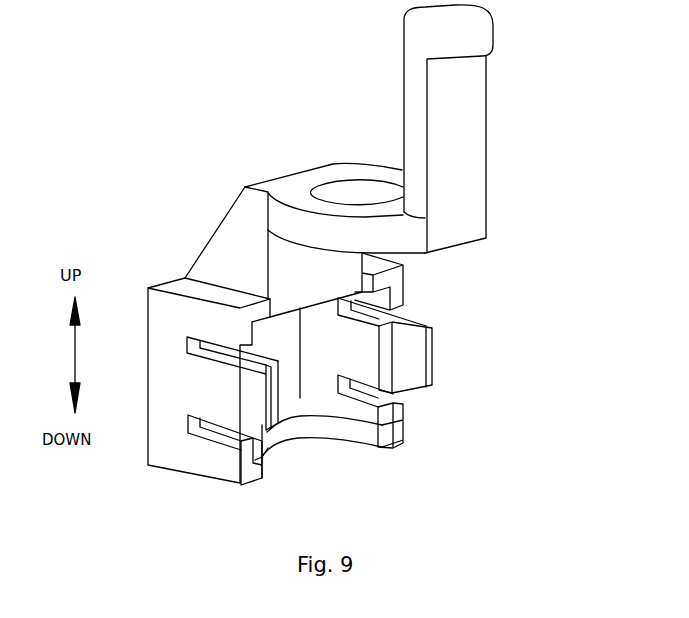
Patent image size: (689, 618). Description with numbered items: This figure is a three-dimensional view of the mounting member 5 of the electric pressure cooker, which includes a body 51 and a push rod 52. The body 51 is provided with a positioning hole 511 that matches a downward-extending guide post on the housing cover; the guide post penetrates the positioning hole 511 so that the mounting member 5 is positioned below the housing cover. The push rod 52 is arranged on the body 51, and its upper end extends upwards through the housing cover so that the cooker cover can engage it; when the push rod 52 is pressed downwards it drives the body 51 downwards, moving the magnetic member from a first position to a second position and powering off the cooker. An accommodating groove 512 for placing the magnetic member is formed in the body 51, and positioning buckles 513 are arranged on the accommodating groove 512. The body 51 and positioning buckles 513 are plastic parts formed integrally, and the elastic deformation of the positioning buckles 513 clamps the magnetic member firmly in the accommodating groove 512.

The mounting member 5 is at (175, 75).
The body 51 is at (329, 305).
The positioning hole 511 is at (357, 197).
The accommodating groove 512 is at (300, 398).
The positioning buckles 513 is at (263, 388).
The push rod 52 is at (453, 107).